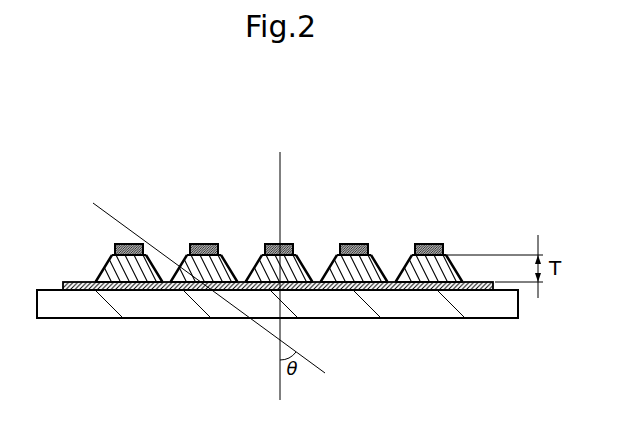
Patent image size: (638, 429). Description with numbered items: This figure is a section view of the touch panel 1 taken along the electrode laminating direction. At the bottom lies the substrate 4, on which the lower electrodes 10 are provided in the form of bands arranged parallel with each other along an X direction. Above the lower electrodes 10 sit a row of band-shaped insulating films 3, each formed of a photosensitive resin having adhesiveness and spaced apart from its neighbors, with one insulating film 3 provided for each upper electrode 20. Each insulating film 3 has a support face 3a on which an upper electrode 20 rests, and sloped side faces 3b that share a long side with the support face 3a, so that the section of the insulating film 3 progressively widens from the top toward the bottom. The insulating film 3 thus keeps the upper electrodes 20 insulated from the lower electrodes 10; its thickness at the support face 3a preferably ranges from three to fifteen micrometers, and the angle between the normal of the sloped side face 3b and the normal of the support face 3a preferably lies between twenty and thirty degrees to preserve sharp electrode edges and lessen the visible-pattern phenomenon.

The touch panel 1 is at (333, 183).
The insulating film 3 is at (427, 268).
The support face 3a is at (417, 243).
The sloped side face 3b is at (407, 262).
The substrate 4 is at (69, 307).
The lower electrode 10 is at (78, 281).
The upper electrode 20 is at (432, 244).